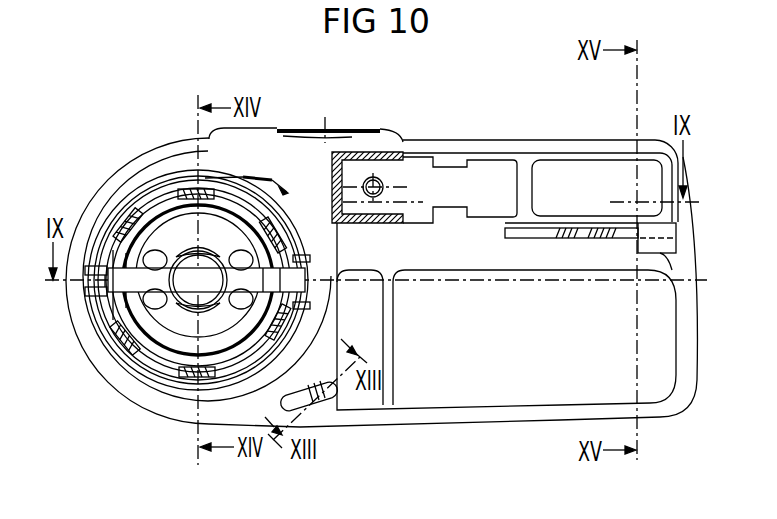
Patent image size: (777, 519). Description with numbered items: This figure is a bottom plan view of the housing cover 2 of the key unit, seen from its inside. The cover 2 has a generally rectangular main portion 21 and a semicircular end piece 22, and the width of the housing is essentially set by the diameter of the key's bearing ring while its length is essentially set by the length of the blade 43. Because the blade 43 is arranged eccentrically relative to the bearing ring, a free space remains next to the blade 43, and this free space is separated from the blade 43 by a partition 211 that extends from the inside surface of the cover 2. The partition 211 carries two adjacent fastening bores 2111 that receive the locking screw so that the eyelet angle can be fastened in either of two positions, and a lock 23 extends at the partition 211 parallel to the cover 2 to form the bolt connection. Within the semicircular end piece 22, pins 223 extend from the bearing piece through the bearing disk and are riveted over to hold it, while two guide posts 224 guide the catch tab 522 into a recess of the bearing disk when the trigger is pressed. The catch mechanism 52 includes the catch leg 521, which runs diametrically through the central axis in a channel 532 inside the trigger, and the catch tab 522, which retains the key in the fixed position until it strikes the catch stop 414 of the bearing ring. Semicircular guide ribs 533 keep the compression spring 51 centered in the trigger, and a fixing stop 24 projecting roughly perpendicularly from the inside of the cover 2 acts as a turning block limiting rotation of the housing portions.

The housing cover 2 is at (602, 128).
The main portion 21 is at (510, 418).
The end piece 22 is at (141, 410).
The lock 23 is at (660, 253).
The fixing stop 24 is at (326, 418).
The blade 43 is at (557, 153).
The compression spring 51 is at (166, 242).
The catch mechanism 52 is at (153, 243).
The catch leg 521 is at (198, 280).
The catch tab 522 is at (118, 255).
The channel 532 is at (281, 188).
The guide ribs 533 is at (187, 246).
The partition 211 is at (532, 235).
The fastening bores 2111 is at (573, 240).
The pins 223 is at (186, 373).
The guide posts 224 is at (101, 266).
The catch stop 414 is at (95, 288).